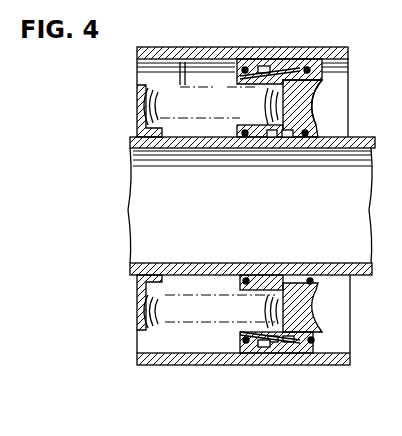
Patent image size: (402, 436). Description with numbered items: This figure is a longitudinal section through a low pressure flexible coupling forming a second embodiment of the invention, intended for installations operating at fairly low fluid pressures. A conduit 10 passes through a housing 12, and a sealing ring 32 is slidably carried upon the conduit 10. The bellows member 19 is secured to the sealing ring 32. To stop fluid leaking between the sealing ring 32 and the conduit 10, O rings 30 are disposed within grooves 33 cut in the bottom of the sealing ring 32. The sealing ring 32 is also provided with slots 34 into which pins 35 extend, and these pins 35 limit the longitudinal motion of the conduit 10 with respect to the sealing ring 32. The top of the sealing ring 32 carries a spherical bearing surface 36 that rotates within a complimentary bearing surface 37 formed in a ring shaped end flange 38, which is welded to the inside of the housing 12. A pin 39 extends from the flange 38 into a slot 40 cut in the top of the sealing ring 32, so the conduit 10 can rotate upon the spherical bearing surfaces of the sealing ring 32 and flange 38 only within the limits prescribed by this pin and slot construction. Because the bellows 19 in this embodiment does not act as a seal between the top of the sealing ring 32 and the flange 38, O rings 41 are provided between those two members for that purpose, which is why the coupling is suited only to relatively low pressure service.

The conduit 10 is at (358, 140).
The housing 12 is at (339, 47).
The bellows member 19 is at (172, 92).
The O rings 30 is at (240, 130).
The sealing ring 32 is at (306, 106).
The grooves 33 is at (259, 125).
The slots 34 is at (288, 137).
The pins 35 is at (276, 137).
The spherical bearing surface 36 is at (258, 70).
The complimentary bearing surface 37 is at (268, 67).
The ring shaped end flange 38 is at (305, 67).
The pin 39 is at (313, 84).
The slot 40 is at (244, 79).
The O rings 41 is at (245, 66).